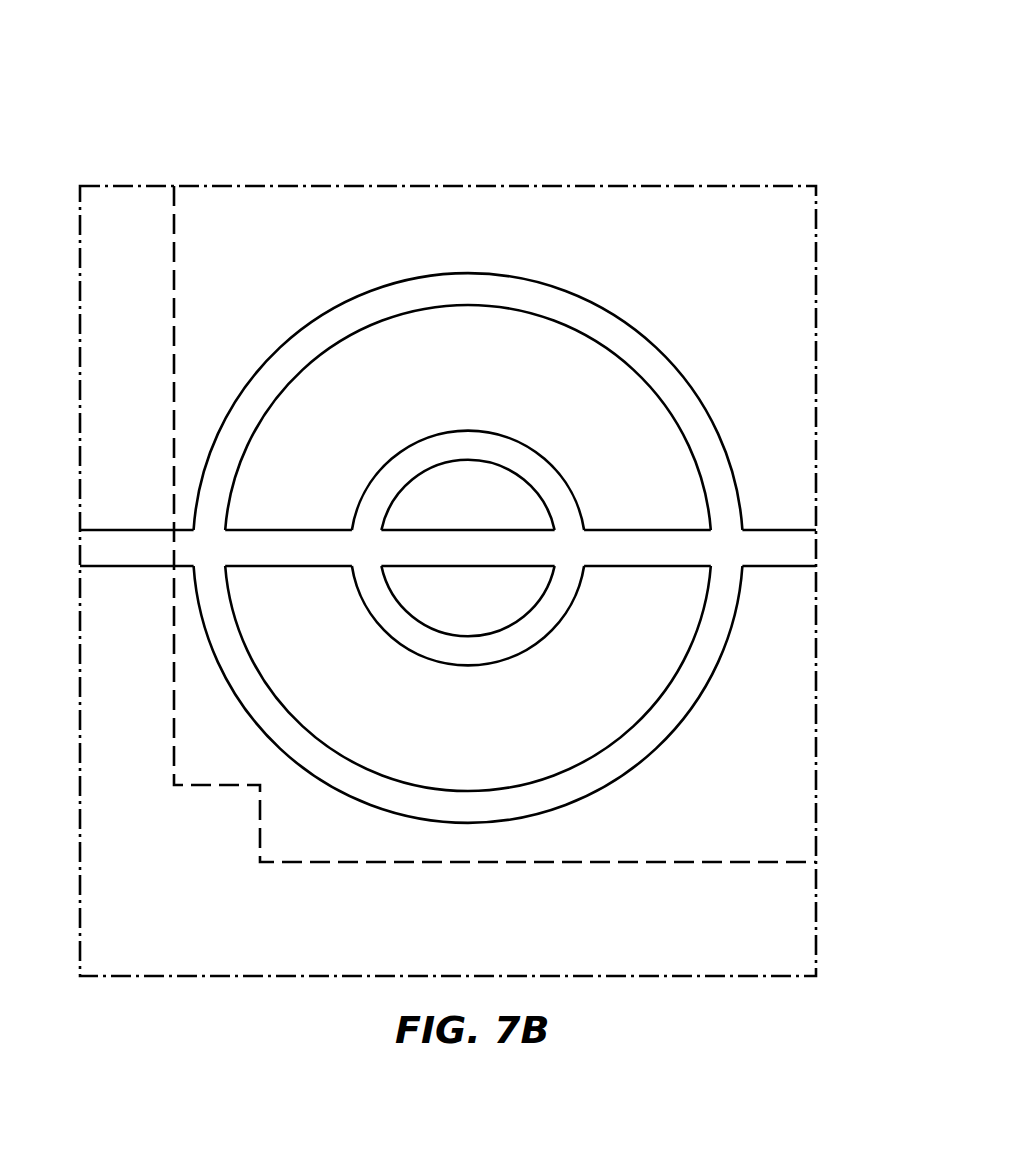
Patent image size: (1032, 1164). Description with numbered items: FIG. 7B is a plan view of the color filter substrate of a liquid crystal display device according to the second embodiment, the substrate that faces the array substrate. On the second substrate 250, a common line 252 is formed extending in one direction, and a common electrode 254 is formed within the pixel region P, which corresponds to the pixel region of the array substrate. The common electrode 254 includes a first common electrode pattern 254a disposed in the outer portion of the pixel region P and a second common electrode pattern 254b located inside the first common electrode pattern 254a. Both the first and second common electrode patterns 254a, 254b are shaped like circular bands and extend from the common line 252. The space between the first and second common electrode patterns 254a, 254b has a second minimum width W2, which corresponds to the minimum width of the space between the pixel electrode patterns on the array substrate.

The second substrate 250 is at (816, 218).
The common line 252 is at (816, 532).
The common electrode 254 is at (468, 431).
The first common electrode pattern 254a is at (437, 290).
The second common electrode pattern 254b is at (522, 460).
The pixel region P is at (168, 275).
The second minimum width W2 is at (470, 312).